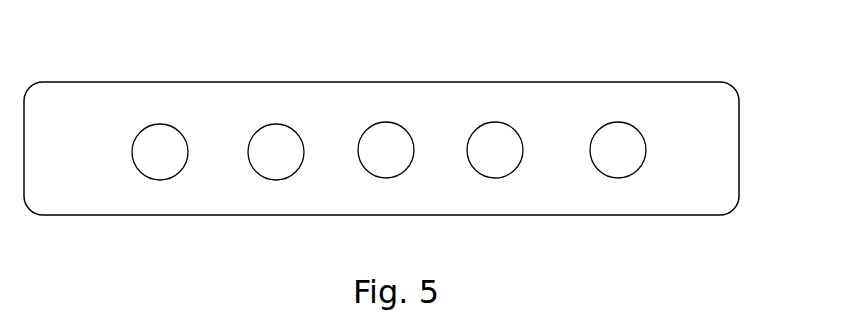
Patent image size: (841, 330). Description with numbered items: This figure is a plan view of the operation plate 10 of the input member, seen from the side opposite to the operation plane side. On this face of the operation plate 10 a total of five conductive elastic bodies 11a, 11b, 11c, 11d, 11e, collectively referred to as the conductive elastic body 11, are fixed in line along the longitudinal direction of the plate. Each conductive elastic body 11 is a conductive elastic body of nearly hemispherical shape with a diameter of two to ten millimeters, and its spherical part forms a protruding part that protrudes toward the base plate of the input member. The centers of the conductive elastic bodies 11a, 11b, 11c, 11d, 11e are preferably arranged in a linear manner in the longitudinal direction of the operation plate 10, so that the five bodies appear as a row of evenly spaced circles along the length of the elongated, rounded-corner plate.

The operation plate 10 is at (668, 97).
The conductive elastic body 11 is at (374, 114).
The conductive elastic body 11a is at (163, 138).
The conductive elastic body 11b is at (267, 138).
The conductive elastic body 11c is at (365, 137).
The conductive elastic body 11d is at (486, 138).
The conductive elastic body 11e is at (605, 137).